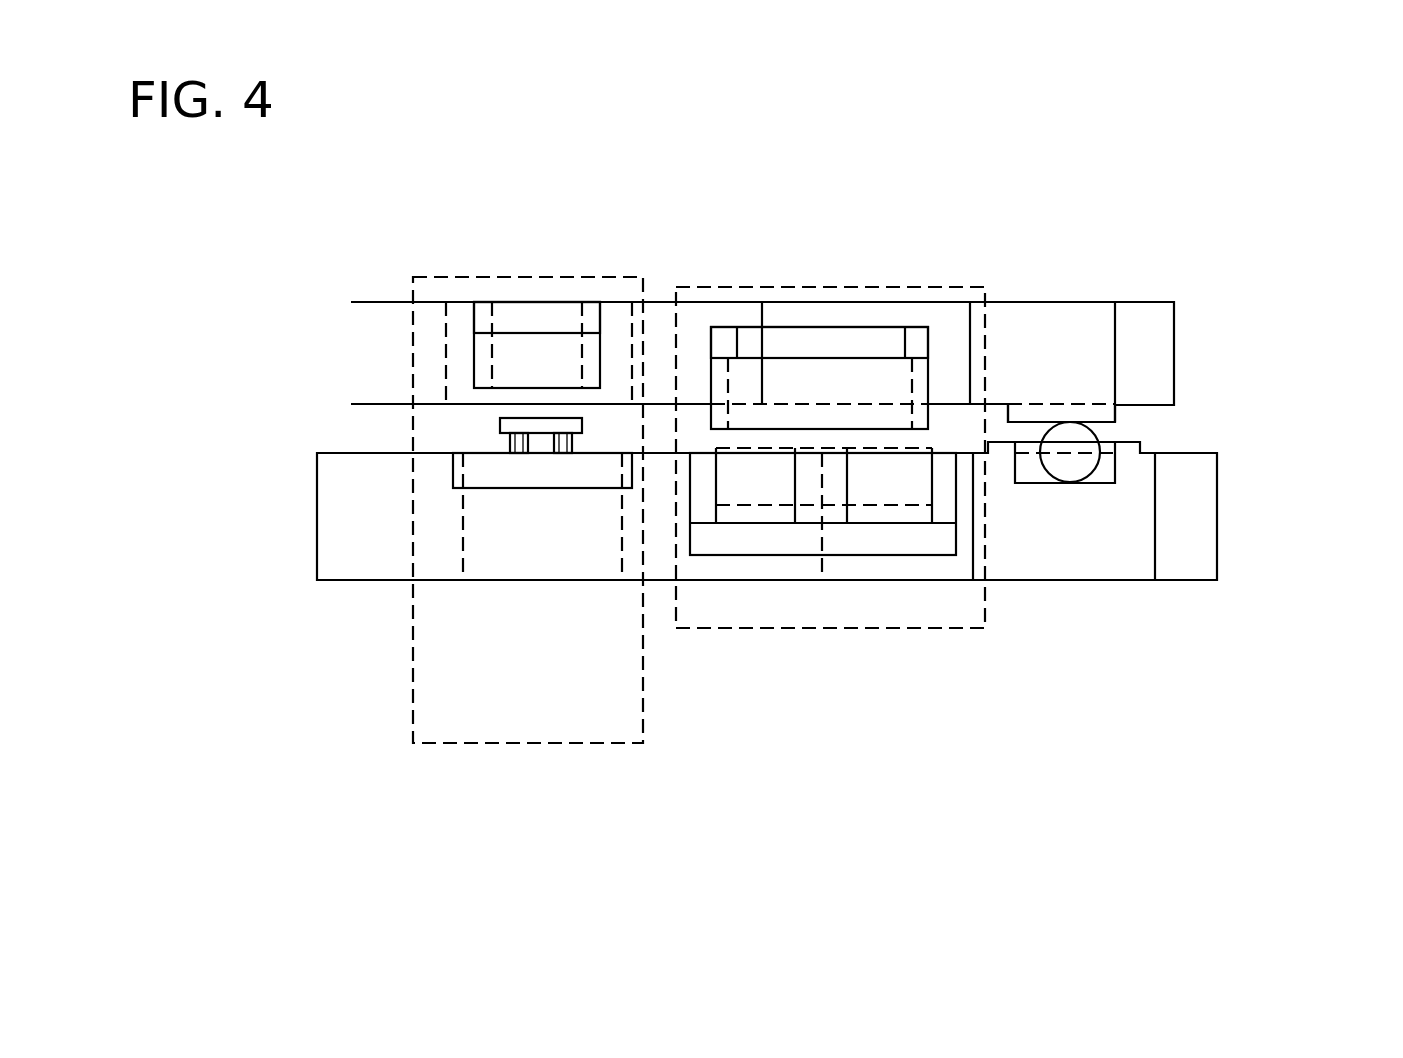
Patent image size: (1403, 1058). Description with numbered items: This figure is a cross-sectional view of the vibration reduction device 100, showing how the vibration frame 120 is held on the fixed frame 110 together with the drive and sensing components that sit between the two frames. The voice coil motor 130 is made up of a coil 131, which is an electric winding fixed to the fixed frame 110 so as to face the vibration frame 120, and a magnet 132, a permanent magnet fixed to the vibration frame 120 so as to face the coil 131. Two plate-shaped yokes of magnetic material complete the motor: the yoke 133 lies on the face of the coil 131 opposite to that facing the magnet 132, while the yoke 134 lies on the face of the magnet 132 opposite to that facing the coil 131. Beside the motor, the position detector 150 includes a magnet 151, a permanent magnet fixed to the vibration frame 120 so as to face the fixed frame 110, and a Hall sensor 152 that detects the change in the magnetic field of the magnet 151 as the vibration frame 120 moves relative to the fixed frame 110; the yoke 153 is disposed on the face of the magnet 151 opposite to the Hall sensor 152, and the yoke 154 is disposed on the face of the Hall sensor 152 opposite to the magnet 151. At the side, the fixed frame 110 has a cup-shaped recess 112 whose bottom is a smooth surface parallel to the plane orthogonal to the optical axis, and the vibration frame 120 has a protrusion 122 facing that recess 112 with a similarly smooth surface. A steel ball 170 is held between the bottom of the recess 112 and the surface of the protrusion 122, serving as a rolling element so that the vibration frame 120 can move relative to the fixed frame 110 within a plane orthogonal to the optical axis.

The vibration reduction device 100 is at (264, 262).
The fixed frame 110 is at (323, 542).
The recess 112 is at (1117, 468).
The vibration frame 120 is at (351, 370).
The protrusion 122 is at (1117, 416).
The voice coil motor 130 is at (784, 628).
The coil 131 is at (890, 517).
The magnet 132 is at (876, 380).
The yoke 133 is at (866, 540).
The yoke 134 is at (830, 344).
The position detector 150 is at (518, 743).
The magnet 151 is at (565, 358).
The Hall sensor 152 is at (553, 427).
The yoke 153 is at (526, 317).
The yoke 154 is at (518, 477).
The steel ball 170 is at (1090, 433).